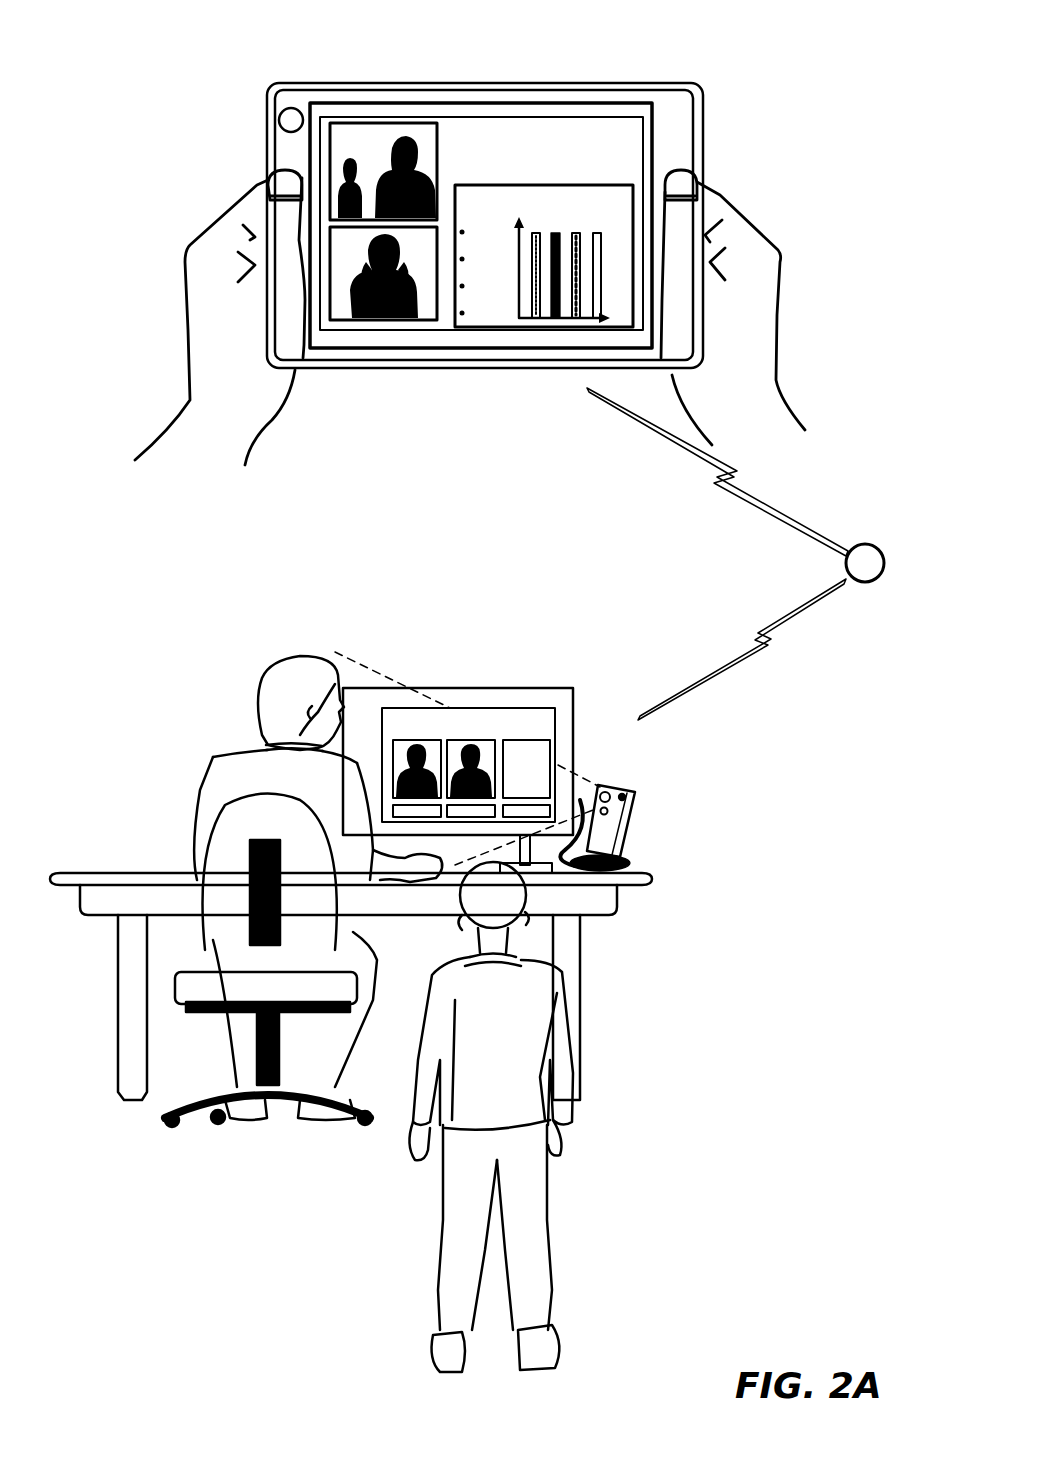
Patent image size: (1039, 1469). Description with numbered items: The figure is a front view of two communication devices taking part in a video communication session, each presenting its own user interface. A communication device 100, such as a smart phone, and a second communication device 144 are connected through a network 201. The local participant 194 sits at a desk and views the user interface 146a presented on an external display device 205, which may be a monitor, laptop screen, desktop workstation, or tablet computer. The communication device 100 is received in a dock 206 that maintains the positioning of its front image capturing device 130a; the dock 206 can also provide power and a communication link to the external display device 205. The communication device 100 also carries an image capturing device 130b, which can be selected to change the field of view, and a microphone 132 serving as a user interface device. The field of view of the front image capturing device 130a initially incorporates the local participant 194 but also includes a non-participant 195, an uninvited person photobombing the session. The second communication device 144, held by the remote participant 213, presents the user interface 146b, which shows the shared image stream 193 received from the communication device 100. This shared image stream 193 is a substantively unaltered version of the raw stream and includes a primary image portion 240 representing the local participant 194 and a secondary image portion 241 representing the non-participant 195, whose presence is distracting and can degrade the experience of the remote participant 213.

The second communication device 144 is at (267, 92).
The shared image stream 193 is at (440, 153).
The user interface 146b is at (478, 182).
The primary image portion 240 is at (405, 138).
The secondary image portion 241 is at (352, 160).
The remote participant 213 is at (780, 312).
The network 201 is at (870, 545).
The external display device 205 is at (500, 688).
The user interface 146a is at (491, 735).
The local participant 194 is at (228, 755).
The non-participant 195 is at (548, 1220).
The communication device 100 is at (670, 767).
The front image capturing device 130a is at (600, 785).
The image capturing device 130b is at (608, 812).
The microphone 132 is at (632, 806).
The dock 206 is at (630, 865).